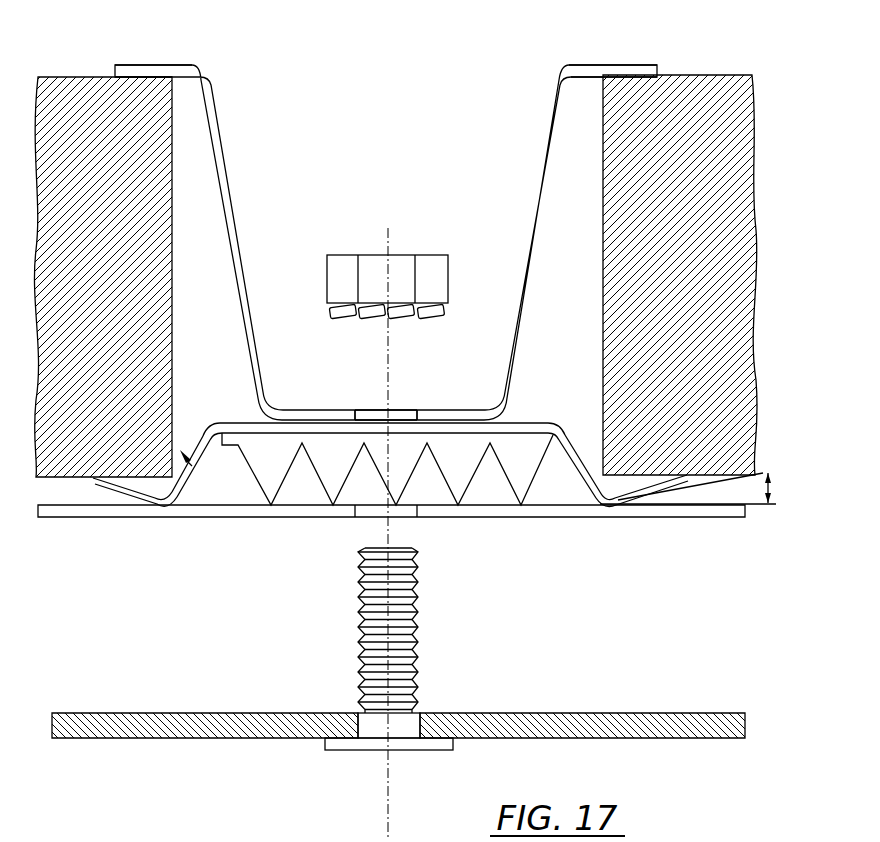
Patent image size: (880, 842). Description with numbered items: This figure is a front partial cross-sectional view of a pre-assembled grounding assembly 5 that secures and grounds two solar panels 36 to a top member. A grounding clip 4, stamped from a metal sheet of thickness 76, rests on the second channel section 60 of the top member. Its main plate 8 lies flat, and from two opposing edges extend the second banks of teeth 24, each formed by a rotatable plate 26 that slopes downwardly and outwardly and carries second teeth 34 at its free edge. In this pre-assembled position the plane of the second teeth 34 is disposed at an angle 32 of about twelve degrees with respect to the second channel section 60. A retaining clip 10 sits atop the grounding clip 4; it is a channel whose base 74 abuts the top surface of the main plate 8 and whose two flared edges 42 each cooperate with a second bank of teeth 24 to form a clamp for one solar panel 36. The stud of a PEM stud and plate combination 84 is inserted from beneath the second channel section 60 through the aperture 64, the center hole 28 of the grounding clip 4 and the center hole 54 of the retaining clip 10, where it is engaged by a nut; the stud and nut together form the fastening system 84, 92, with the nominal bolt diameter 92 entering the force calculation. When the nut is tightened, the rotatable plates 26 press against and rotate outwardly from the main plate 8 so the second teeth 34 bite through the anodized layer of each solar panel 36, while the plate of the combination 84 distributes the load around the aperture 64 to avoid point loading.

The grounding clip 4 is at (390, 463).
The grounding assembly 5 is at (331, 196).
The main plate 8 is at (462, 422).
The retaining clip 10 is at (228, 146).
The second banks of teeth 24 is at (238, 486).
The rotatable plate 26 is at (180, 492).
The center hole 28 is at (355, 410).
The angle 32 is at (772, 484).
The second teeth 34 is at (147, 494).
The solar panel 36 is at (172, 290).
The flared edges 42 is at (158, 63).
The center hole 54 is at (397, 410).
The second channel section 60 is at (695, 517).
The aperture 64 is at (403, 519).
The base 74 is at (425, 410).
The thickness 76 is at (206, 477).
The PEM stud and plate combination 84 is at (360, 652).
The nominal diameter of bolt 92 is at (414, 256).